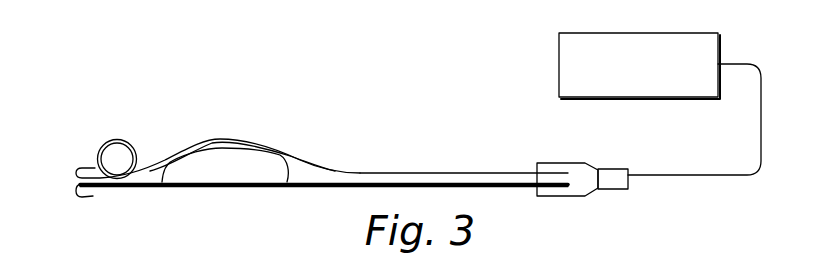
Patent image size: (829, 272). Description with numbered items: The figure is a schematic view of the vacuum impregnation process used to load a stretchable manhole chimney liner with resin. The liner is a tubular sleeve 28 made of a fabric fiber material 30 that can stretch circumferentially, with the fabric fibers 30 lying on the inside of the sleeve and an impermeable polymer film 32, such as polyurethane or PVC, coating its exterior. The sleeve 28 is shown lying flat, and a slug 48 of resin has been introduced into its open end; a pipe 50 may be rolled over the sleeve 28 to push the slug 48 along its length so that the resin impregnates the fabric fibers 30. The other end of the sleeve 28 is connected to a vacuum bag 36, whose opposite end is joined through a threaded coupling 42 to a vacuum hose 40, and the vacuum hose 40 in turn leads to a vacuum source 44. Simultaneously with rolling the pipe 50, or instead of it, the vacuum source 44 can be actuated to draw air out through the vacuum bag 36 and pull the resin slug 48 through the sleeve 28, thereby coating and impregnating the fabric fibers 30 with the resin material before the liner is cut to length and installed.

The tubular sleeve 28 is at (422, 172).
The fabric fiber material 30 is at (296, 162).
The impermeable polymer film 32 is at (320, 186).
The vacuum bag 36 is at (574, 169).
The vacuum hose 40 is at (761, 127).
The threaded coupling 42 is at (612, 189).
The vacuum source 44 is at (568, 67).
The slug of resin 48 is at (213, 155).
The pipe 50 is at (102, 143).